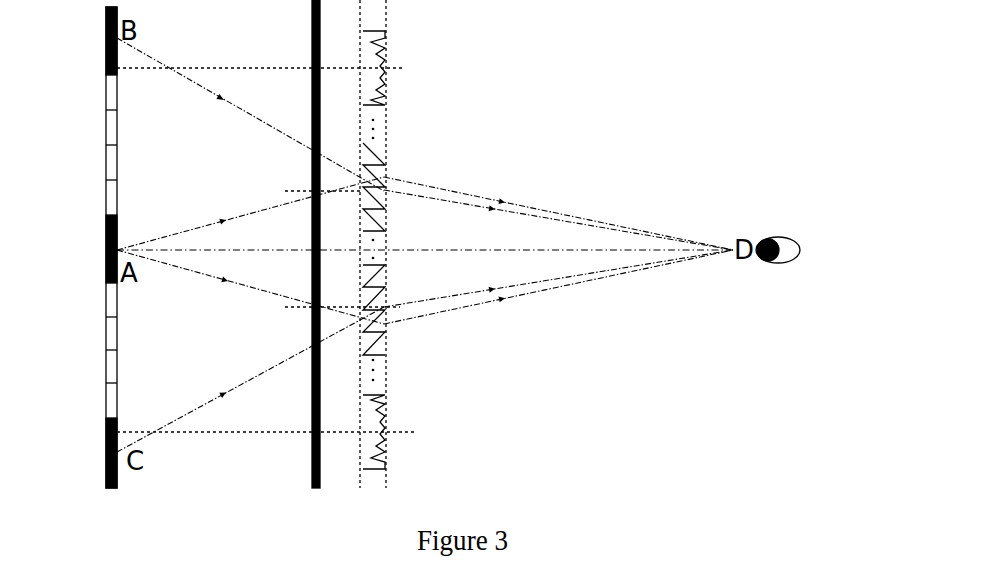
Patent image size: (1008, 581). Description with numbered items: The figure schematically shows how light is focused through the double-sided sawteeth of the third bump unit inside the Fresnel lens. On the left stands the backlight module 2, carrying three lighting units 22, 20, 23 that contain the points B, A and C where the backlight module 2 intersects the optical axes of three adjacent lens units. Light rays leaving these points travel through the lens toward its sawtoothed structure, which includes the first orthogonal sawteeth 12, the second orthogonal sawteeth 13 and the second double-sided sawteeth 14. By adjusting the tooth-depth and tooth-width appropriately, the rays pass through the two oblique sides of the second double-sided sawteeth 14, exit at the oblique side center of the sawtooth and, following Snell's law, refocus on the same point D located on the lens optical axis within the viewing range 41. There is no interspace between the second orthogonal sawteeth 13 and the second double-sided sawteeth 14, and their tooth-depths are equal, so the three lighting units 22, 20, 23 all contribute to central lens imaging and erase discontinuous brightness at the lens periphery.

The backlight module 2 is at (106, 195).
The lighting unit 20 is at (106, 250).
The lighting unit 22 is at (106, 45).
The lighting unit 23 is at (106, 455).
The first orthogonal sawteeth 12 is at (386, 62).
The second orthogonal sawteeth 13 is at (387, 220).
The second double-sided sawteeth 14 is at (387, 162).
The viewing range 41 is at (800, 250).